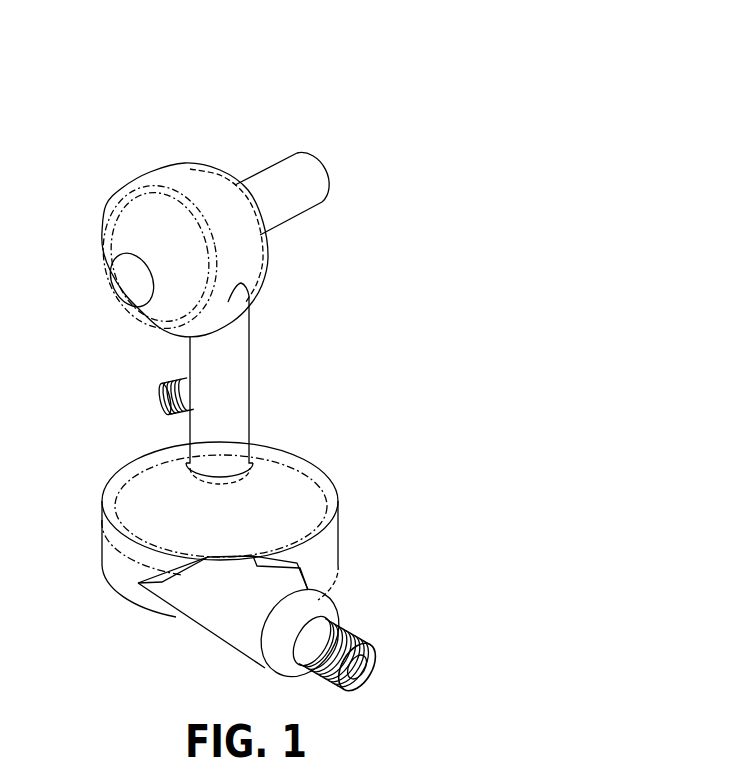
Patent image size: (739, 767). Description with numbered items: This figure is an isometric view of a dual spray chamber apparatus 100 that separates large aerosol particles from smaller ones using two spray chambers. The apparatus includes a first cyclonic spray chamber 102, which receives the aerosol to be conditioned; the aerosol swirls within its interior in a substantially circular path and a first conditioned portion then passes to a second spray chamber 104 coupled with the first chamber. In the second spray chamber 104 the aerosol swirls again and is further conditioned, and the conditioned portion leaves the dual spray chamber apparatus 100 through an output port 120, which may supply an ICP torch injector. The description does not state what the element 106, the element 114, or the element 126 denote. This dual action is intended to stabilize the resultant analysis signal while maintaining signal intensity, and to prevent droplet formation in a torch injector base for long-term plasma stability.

The dual spray chamber apparatus 100 is at (153, 79).
The first cyclonic spray chamber 102 is at (323, 470).
The second spray chamber 104 is at (133, 183).
The threaded stem 106 is at (348, 637).
The neck 114 is at (233, 378).
The output port 120 is at (282, 155).
The set screw 126 is at (167, 385).